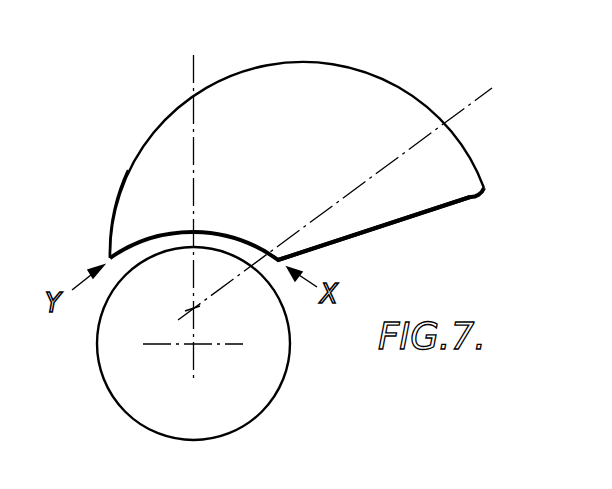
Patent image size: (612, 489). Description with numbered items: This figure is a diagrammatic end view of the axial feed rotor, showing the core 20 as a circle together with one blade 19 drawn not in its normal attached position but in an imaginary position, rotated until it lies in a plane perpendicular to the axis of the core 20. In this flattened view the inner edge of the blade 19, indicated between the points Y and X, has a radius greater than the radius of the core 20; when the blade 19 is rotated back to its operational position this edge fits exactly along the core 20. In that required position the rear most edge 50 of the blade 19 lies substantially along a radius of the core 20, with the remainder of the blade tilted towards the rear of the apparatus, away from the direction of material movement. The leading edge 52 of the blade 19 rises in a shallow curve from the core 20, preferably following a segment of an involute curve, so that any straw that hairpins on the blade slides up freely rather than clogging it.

The blade 19 is at (157, 126).
The core 20 is at (290, 347).
The rear most edge 50 is at (403, 220).
The leading edge 52 is at (118, 193).